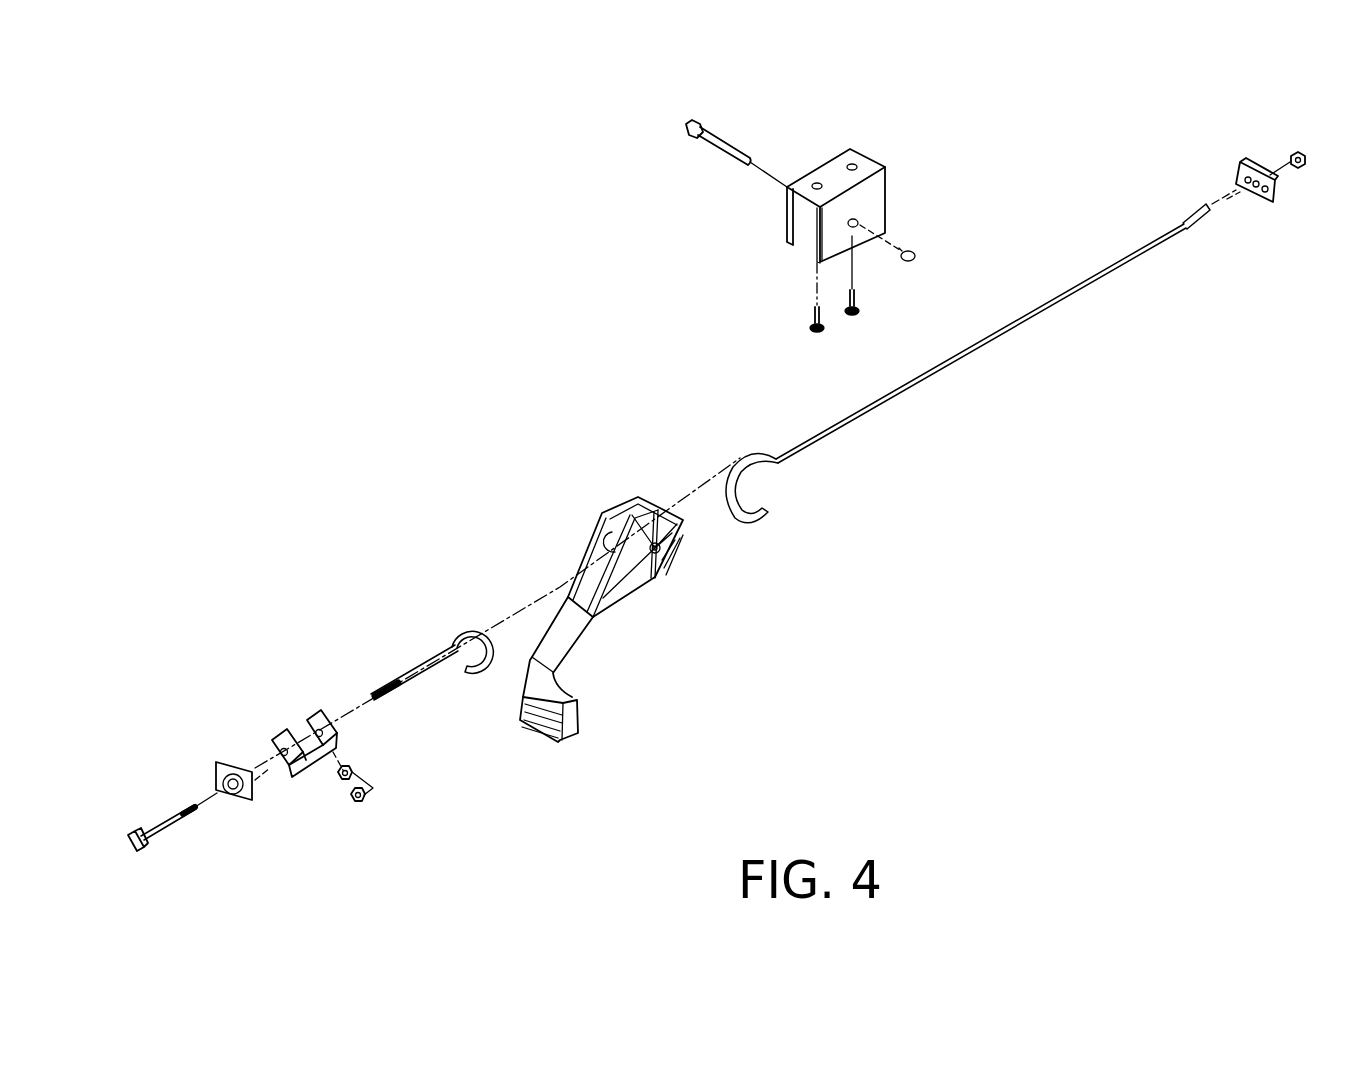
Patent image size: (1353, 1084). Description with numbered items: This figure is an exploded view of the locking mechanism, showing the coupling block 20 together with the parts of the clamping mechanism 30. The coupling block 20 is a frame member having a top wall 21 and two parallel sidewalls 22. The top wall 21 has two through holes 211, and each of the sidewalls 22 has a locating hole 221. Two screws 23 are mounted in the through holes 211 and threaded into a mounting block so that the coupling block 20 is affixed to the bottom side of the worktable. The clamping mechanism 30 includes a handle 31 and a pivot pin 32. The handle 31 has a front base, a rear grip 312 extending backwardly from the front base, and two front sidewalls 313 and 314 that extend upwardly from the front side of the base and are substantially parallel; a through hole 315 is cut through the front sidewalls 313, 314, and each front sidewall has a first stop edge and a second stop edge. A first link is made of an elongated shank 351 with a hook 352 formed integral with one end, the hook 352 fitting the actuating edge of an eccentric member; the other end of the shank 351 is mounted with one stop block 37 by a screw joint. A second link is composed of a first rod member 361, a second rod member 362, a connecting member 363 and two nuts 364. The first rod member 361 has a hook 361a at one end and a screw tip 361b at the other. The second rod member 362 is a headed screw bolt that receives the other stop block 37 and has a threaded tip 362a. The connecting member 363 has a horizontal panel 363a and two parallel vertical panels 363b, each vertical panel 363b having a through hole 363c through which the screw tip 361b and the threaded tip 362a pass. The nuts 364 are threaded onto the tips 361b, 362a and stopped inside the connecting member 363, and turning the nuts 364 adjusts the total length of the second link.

The coupling block 20 is at (857, 78).
The top wall 21 is at (830, 175).
The through holes 211 is at (815, 184).
The sidewalls 22 is at (868, 205).
The locating hole 221 is at (858, 221).
The screws 23 is at (858, 305).
The clamping mechanism 30 is at (530, 352).
The handle 31 is at (600, 660).
The rear grip 312 is at (545, 707).
The front sidewall 313 is at (595, 513).
The front sidewall 314 is at (652, 580).
The through hole 315 is at (660, 550).
The pivot pin 32 is at (712, 152).
The elongated shank 351 is at (988, 342).
The hook 352 is at (746, 457).
The first rod member 361 is at (503, 492).
The hook 361a is at (475, 633).
The screw tip 361b is at (378, 690).
The second rod member 362 is at (153, 825).
The threaded tip 362a is at (188, 812).
The connecting member 363 is at (317, 573).
The horizontal panel 363a is at (305, 772).
The vertical panels 363b is at (328, 722).
The through hole 363c is at (316, 732).
The nuts 364 is at (353, 770).
The stop blocks 37 is at (217, 767).